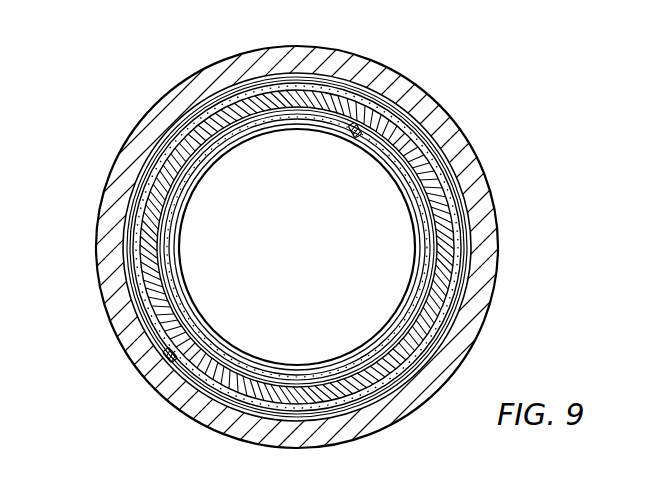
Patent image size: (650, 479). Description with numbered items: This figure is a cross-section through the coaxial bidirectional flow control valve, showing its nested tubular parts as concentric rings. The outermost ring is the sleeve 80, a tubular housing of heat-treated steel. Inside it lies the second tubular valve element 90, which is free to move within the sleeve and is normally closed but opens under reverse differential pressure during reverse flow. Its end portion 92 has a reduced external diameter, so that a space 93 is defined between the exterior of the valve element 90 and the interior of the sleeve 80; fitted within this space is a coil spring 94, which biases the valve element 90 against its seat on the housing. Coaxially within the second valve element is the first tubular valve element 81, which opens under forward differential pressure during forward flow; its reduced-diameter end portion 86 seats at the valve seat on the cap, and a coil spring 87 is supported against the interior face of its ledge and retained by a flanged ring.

The sleeve 80 is at (145, 133).
The first tubular valve element 81 is at (247, 378).
The end portion 86 is at (422, 242).
The coil spring 87 is at (383, 343).
The second tubular valve element 90 is at (136, 228).
The end portion 92 is at (157, 302).
The space 93 is at (427, 127).
The coil spring 94 is at (455, 178).